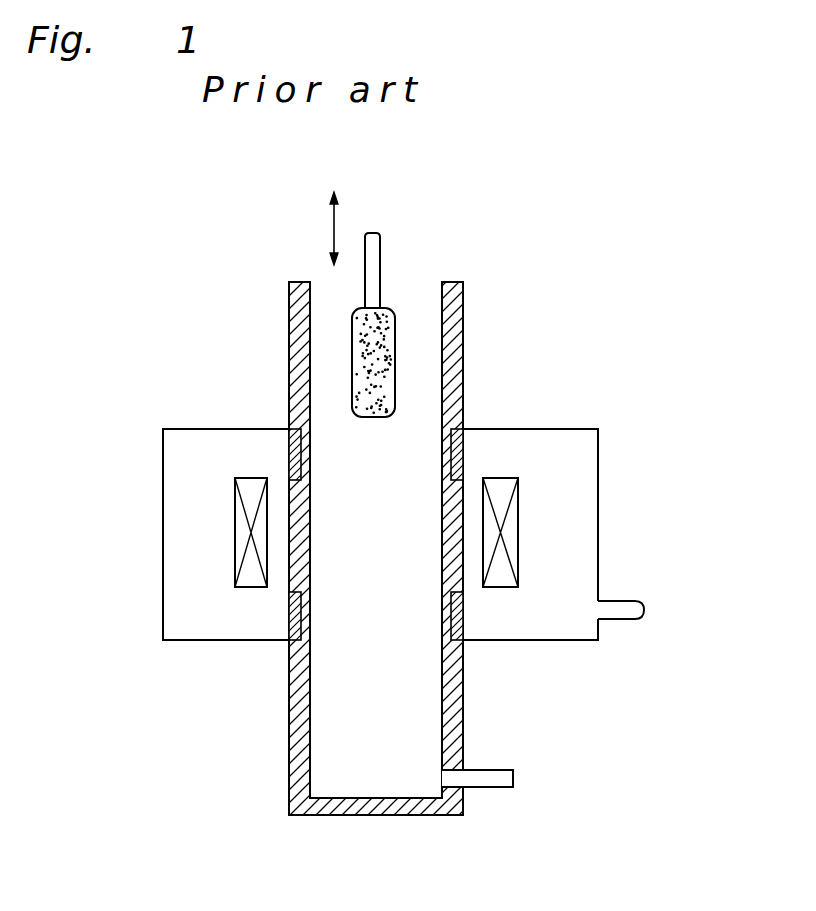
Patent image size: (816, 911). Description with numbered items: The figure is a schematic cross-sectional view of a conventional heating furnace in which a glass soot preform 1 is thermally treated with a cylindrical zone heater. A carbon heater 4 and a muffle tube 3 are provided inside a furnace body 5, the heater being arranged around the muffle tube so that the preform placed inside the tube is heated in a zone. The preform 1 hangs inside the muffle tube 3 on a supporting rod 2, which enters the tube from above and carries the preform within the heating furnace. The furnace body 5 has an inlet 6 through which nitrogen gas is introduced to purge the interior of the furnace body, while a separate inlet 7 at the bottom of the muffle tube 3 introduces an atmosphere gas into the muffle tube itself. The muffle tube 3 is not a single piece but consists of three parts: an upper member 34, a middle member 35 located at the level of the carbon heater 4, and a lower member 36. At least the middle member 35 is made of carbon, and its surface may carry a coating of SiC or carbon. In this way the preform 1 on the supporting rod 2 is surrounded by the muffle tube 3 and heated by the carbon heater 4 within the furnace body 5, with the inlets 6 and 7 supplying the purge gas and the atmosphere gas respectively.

The glass soot preform 1 is at (387, 322).
The supporting rod 2 is at (376, 238).
The muffle tube 3 is at (470, 292).
The carbon heater 4 is at (238, 532).
The furnace body 5 is at (596, 460).
The inlet 6 is at (632, 612).
The inlet 7 is at (490, 775).
The upper member 34 is at (297, 337).
The middle member 35 is at (290, 490).
The lower member 36 is at (300, 742).